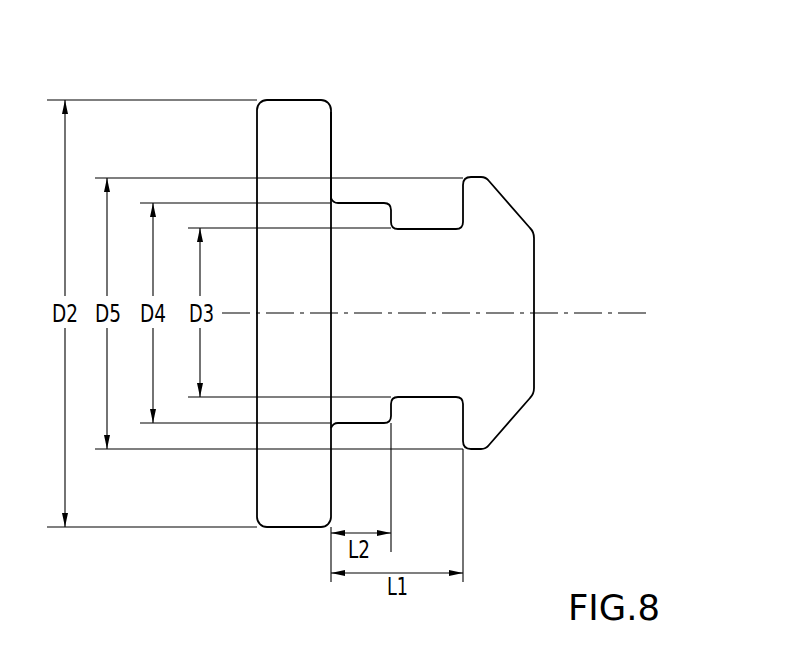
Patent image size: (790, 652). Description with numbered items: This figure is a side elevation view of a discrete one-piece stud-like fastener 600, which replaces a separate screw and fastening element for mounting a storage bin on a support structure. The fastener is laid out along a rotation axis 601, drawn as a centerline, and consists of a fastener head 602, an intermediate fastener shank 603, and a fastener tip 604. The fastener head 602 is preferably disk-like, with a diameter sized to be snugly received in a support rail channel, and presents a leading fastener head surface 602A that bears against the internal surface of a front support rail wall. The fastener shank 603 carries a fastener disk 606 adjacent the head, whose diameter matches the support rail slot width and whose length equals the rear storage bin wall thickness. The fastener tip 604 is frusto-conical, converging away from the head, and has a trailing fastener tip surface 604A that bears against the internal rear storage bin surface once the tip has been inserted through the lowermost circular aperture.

The stud-like fastener 600 is at (602, 122).
The rotation axis 601 is at (592, 312).
The fastener head 602 is at (293, 100).
The leading fastener head surface 602A is at (333, 127).
The fastener shank 603 is at (370, 201).
The fastener tip 604 is at (525, 218).
The trailing fastener tip surface 604A is at (461, 198).
The fastener disk 606 is at (360, 424).